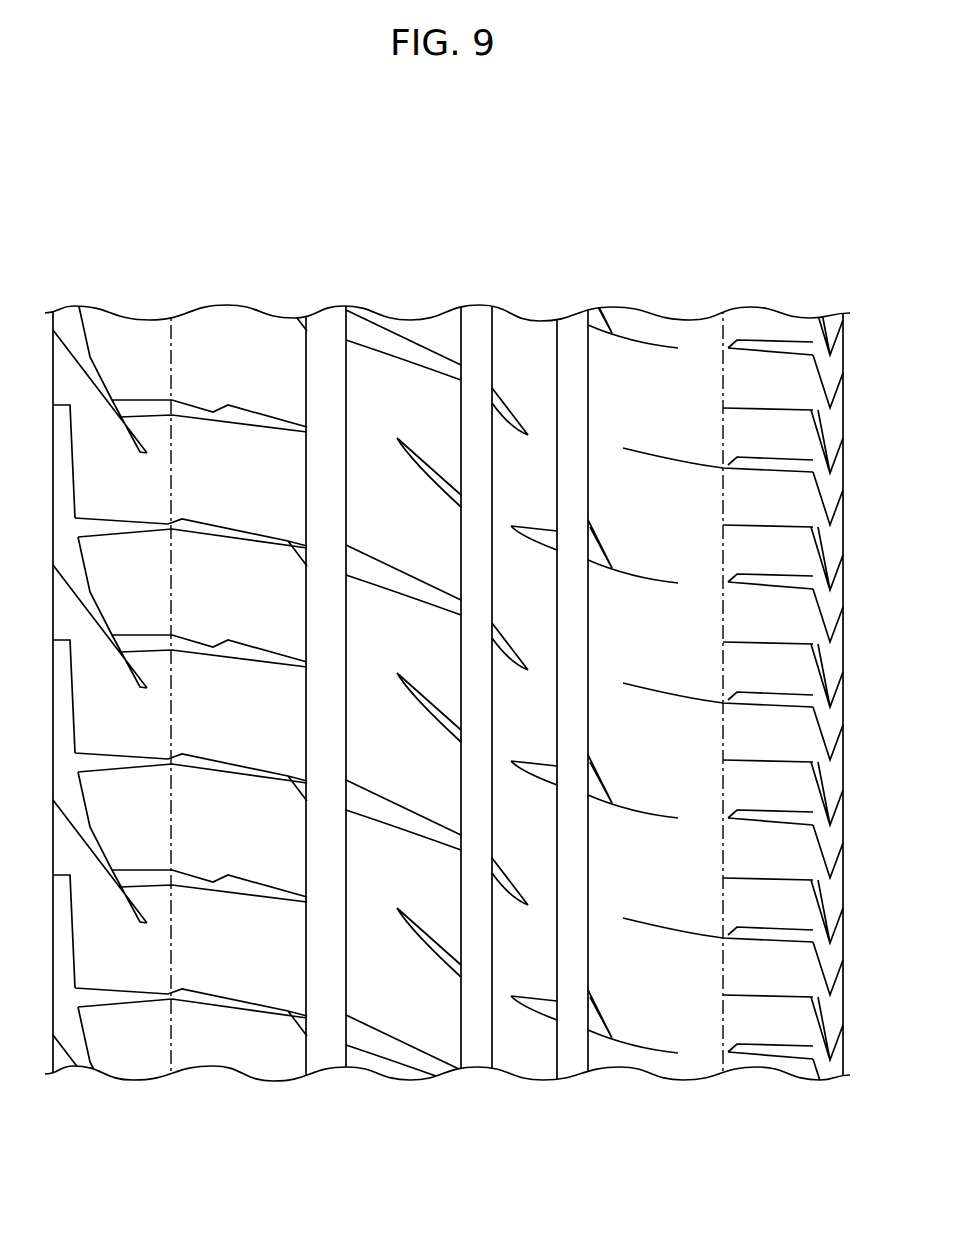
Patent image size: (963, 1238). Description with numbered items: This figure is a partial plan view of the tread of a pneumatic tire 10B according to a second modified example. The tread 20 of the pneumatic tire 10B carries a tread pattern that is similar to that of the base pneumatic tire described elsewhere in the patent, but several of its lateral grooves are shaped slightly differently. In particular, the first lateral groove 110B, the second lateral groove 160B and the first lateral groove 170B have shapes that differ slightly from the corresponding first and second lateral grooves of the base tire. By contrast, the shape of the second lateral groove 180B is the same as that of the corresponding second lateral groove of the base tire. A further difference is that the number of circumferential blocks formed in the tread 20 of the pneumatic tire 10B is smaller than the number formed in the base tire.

The pneumatic tire 10B is at (817, 281).
The tread 20 is at (673, 308).
The first lateral groove 110B is at (619, 539).
The second lateral groove 160B is at (390, 536).
The first lateral groove 170B is at (655, 692).
The second lateral groove 180B is at (192, 643).